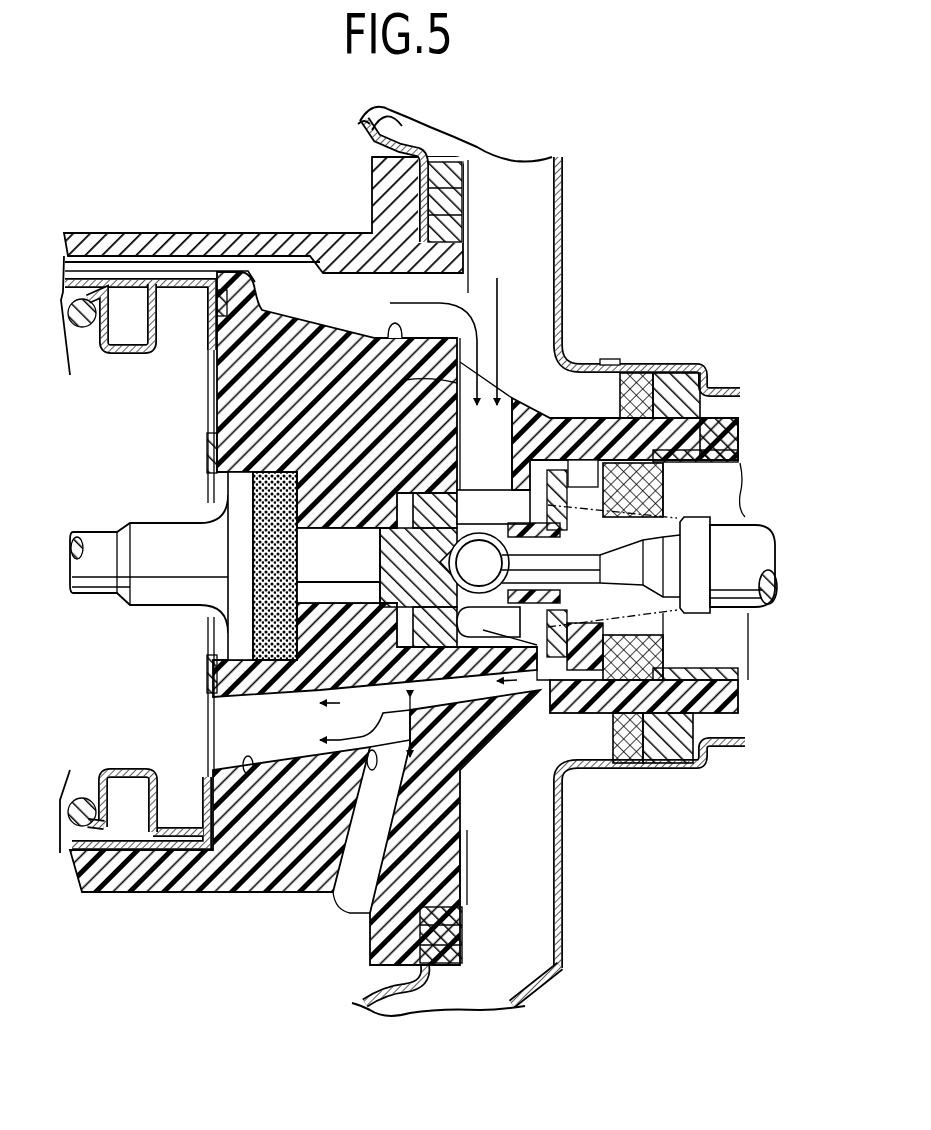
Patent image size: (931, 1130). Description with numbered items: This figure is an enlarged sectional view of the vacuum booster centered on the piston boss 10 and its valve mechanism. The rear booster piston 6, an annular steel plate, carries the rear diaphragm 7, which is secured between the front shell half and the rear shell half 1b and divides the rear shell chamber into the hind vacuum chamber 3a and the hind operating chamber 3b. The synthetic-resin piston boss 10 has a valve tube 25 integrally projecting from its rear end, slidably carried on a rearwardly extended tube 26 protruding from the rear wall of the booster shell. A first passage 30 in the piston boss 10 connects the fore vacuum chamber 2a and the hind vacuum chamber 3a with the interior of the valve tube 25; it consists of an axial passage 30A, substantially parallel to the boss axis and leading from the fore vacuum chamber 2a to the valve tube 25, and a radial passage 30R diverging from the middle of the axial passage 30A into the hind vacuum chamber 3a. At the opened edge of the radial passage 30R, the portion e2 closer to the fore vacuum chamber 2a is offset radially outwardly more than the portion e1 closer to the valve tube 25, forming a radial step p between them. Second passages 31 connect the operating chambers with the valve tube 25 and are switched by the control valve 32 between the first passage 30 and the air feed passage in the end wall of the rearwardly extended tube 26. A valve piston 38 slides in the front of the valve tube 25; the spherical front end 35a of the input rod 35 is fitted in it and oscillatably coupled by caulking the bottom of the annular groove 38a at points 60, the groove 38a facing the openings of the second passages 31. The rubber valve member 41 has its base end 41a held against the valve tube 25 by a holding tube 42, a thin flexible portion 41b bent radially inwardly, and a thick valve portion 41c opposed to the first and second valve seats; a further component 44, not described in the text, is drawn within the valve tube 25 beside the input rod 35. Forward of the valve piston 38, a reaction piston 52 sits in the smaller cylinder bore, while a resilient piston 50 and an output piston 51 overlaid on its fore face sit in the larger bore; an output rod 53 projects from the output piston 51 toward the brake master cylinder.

The rear shell half 1b is at (563, 243).
The fore vacuum chamber 2a is at (122, 705).
The hind vacuum chamber 3a is at (263, 210).
The hind operating chamber 3b is at (520, 231).
The rear booster piston 6 is at (366, 134).
The rear diaphragm 7 is at (403, 115).
The piston boss 10 is at (325, 389).
The valve tube 25 is at (735, 438).
The rearwardly extended tube 26 is at (722, 390).
The first bifurcated passage 30 is at (227, 835).
The axial passage 30A is at (253, 805).
The radial passage 30R is at (358, 803).
The second bifurcated passages 31 is at (401, 340).
The control valve 32 is at (577, 467).
The input rod 35 is at (757, 572).
The spherical front end 35a is at (531, 563).
The valve piston 38 is at (440, 491).
The annular groove 38a is at (418, 567).
The valve member 41 is at (578, 608).
The base end 41a is at (643, 768).
The thin flexible portion 41b is at (587, 612).
The thick valve portion 41c is at (546, 690).
The holding tube 42 is at (736, 460).
The bearing 44 is at (664, 524).
The resilient piston 50 is at (273, 472).
The output piston 51 is at (240, 472).
The reaction piston 52 is at (360, 574).
The output rod 53 is at (97, 540).
The caulking points 60 is at (479, 563).
The edge portion closer to the valve tube e1 is at (415, 720).
The edge portion closer to the fore vacuum chamber e2 is at (342, 775).
The radial step p is at (405, 758).